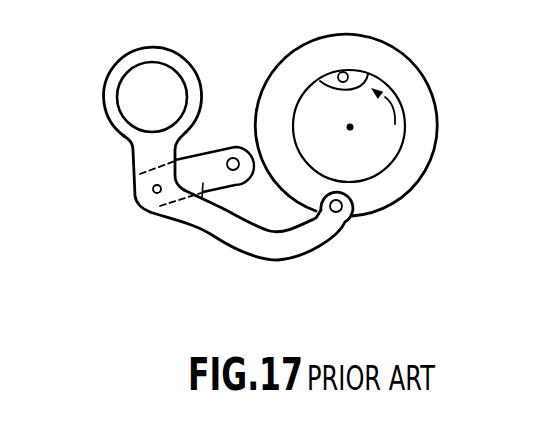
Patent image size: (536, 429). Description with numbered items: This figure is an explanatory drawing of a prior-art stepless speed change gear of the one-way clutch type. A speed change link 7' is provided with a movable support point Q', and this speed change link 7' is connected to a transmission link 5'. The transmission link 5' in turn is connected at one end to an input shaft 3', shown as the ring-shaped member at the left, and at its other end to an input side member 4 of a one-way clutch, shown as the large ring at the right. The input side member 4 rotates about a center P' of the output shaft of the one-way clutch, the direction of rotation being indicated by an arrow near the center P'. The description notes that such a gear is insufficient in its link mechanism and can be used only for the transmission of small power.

The input shaft 3' is at (128, 129).
The transmission link 5' is at (251, 238).
The movable support point Q' is at (197, 149).
The speed change link 7' is at (164, 222).
The input side member 4 is at (382, 200).
The center of output shaft P' is at (350, 116).